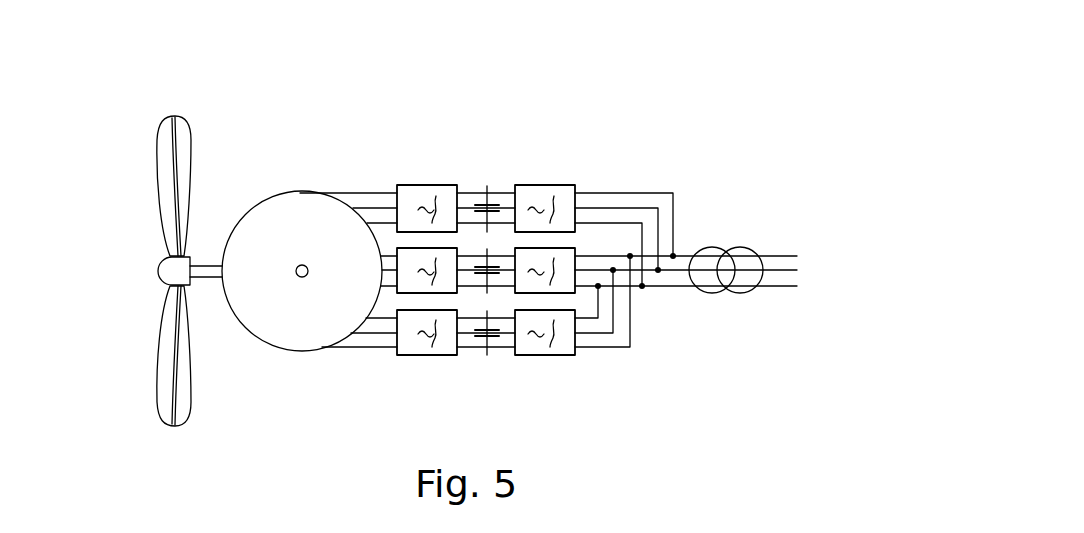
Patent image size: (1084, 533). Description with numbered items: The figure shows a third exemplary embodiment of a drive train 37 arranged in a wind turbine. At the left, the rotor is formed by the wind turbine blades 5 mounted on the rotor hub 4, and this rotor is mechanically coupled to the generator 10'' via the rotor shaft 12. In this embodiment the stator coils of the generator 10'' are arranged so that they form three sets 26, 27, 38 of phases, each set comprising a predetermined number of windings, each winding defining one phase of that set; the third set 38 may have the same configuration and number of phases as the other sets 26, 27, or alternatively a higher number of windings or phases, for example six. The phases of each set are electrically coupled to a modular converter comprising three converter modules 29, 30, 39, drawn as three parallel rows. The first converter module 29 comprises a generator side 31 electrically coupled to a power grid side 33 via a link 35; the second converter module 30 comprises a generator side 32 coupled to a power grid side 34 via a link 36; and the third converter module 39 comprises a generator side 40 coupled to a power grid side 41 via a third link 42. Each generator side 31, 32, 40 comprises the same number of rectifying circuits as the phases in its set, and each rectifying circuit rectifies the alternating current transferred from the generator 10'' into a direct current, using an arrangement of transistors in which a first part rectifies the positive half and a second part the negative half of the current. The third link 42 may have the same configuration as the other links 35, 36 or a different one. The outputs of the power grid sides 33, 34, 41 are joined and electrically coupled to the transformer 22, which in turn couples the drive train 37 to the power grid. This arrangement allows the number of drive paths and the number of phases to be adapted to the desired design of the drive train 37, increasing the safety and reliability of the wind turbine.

The wind turbine blades 5 is at (158, 165).
The rotor hub 4 is at (160, 268).
The rotor shaft 12 is at (206, 262).
The generator 10'' is at (302, 231).
The first set of stator coils 26 is at (370, 182).
The second set of stator coils 27 is at (386, 238).
The third set of phases 38 is at (388, 360).
The generator side of first converter module 31 is at (413, 200).
The generator side of second converter module 32 is at (440, 250).
The generator side of third converter module 40 is at (425, 345).
The link of first converter module 35 is at (487, 177).
The link of second converter module 36 is at (490, 239).
The third link 42 is at (487, 366).
The power grid side of first converter module 33 is at (545, 200).
The power grid side of second converter module 34 is at (565, 287).
The power grid side of third converter module 41 is at (545, 345).
The drive train 37 is at (516, 134).
The first converter module 29 is at (594, 185).
The third converter module 39 is at (641, 357).
The second converter module 30 is at (593, 278).
The transformer 22 is at (738, 260).